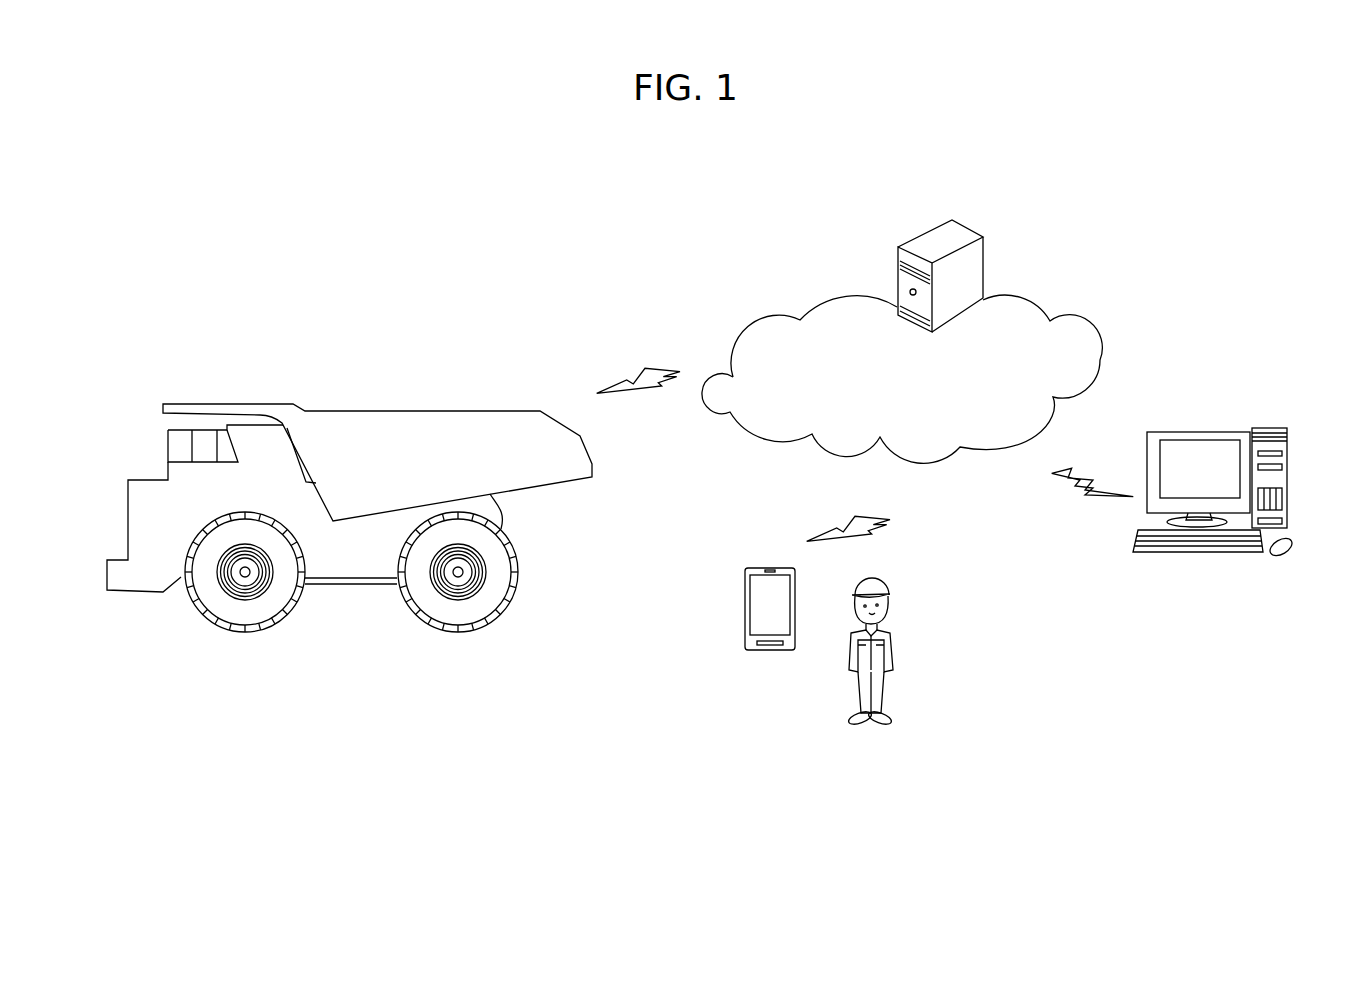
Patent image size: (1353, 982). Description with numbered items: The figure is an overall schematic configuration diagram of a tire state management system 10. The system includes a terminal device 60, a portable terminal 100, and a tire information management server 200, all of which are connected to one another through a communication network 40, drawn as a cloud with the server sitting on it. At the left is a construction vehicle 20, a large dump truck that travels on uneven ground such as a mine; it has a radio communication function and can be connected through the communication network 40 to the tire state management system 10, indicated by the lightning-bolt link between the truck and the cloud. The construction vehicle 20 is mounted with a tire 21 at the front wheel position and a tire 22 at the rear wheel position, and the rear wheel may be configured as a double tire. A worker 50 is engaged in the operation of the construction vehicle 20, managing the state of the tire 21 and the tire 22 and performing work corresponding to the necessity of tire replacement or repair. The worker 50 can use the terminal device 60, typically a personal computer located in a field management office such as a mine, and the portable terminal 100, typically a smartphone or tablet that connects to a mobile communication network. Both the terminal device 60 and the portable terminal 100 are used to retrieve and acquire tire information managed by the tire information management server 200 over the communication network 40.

The tire state management system 10 is at (1123, 222).
The construction vehicle 20 is at (421, 422).
The tire 21 is at (252, 615).
The tire 22 is at (465, 615).
The communication network 40 is at (1000, 313).
The worker 50 is at (892, 647).
The terminal device 60 is at (1210, 430).
The portable terminal 100 is at (745, 595).
The tire information management server 200 is at (962, 230).